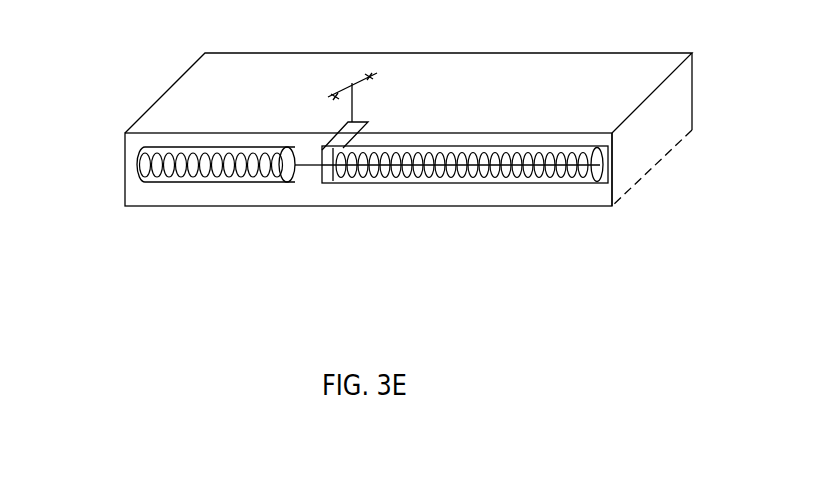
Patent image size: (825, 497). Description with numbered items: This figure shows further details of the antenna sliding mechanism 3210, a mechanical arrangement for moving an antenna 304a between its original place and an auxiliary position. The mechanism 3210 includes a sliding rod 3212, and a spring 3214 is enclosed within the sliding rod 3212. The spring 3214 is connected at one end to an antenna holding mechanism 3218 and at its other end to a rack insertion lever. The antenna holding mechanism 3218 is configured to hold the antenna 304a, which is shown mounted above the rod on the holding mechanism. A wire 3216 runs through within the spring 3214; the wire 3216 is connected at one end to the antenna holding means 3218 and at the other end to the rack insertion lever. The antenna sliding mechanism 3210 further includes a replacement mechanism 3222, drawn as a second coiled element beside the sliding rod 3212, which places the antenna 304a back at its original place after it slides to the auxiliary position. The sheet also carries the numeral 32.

The antenna sliding mechanism 3210 is at (693, 75).
The sliding rod 3212 is at (612, 178).
The spring 3214 is at (510, 174).
The wire 3216 is at (380, 174).
The antenna holding mechanism 3218 is at (337, 132).
The replacement mechanism 3222 is at (140, 179).
The antenna 304a is at (353, 97).
The actuator assembly 32 is at (809, 341).